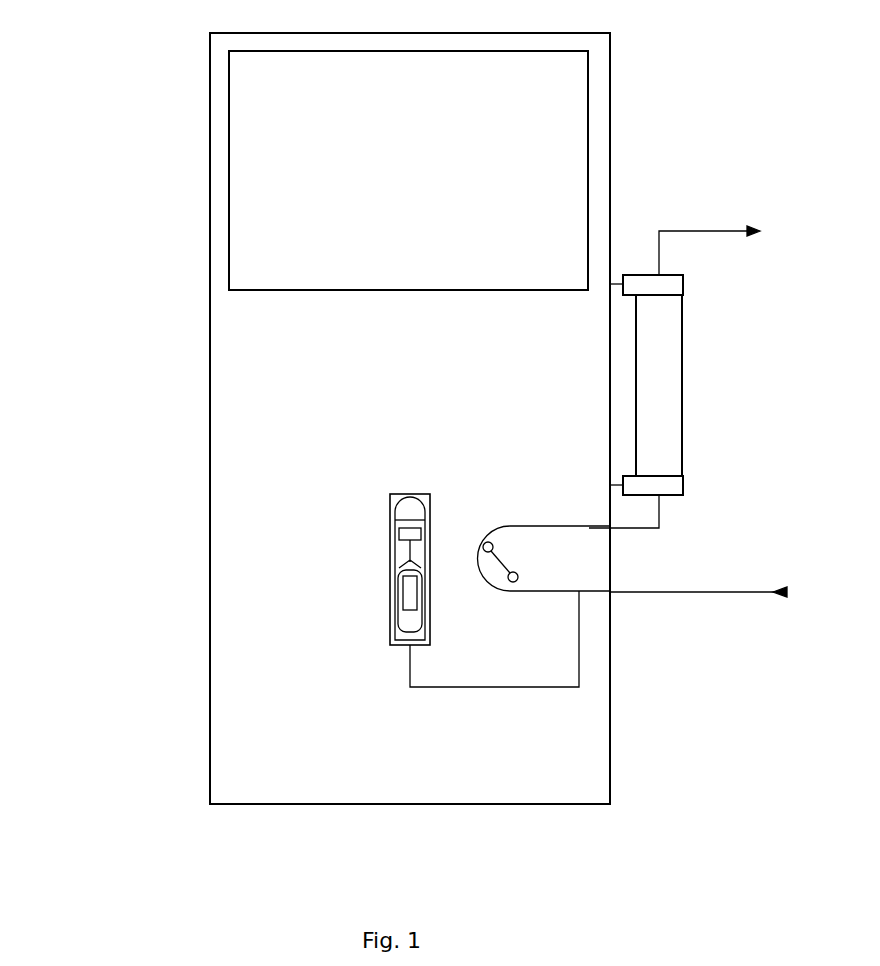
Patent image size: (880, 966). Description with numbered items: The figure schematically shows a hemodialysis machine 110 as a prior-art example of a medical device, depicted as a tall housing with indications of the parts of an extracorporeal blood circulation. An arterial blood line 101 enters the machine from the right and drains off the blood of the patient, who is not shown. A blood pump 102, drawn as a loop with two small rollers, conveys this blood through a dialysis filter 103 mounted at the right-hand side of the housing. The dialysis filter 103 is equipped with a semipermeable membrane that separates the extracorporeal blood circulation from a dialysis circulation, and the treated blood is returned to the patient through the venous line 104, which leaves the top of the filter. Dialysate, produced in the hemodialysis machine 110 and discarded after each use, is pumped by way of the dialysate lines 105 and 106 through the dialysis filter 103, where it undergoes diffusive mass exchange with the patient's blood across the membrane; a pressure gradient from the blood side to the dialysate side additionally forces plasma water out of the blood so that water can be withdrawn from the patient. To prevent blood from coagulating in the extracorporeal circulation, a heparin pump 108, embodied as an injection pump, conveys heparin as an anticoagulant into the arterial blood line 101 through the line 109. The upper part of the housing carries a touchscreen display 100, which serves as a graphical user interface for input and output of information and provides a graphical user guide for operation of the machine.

The hemodialysis machine 110 is at (137, 92).
The touchscreen display 100 is at (558, 95).
The dialysate line 105 is at (617, 278).
The venous line 104 is at (688, 240).
The dialysis filter 103 is at (683, 400).
The dialysate line 106 is at (609, 491).
The blood pump 102 is at (508, 563).
The arterial blood line 101 is at (735, 600).
The heparin pump 108 is at (370, 498).
The line 109 is at (512, 690).